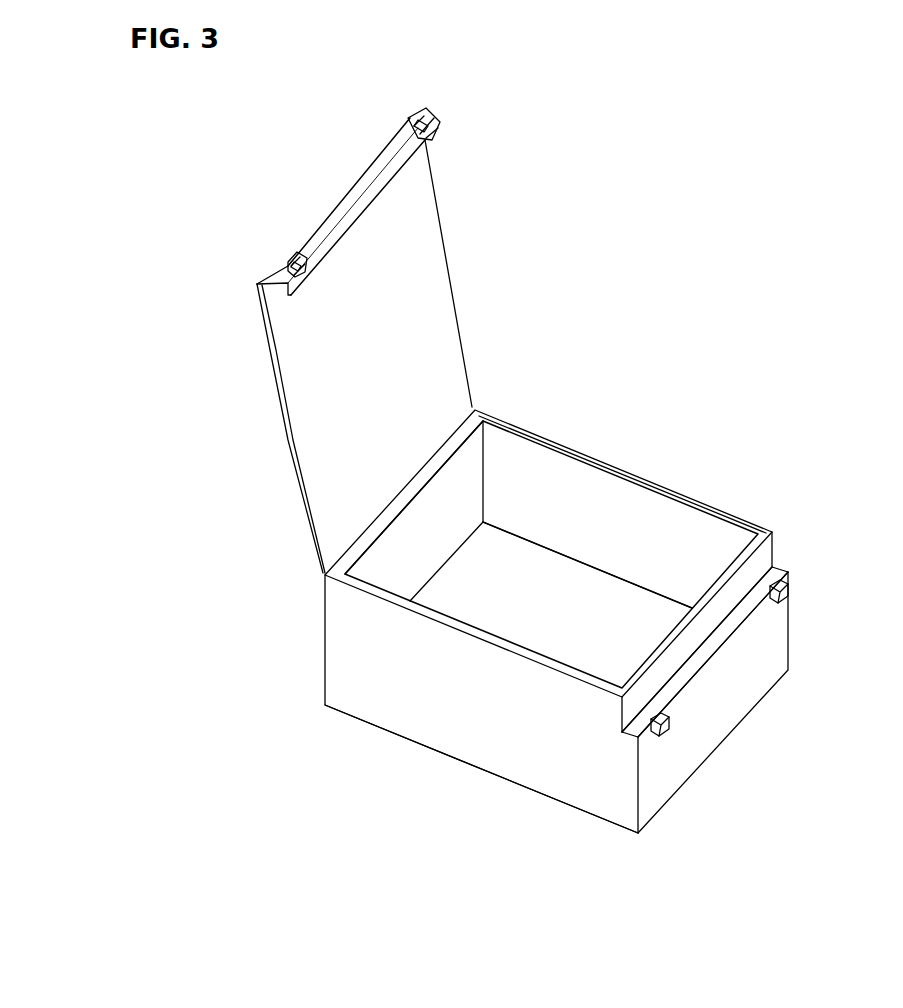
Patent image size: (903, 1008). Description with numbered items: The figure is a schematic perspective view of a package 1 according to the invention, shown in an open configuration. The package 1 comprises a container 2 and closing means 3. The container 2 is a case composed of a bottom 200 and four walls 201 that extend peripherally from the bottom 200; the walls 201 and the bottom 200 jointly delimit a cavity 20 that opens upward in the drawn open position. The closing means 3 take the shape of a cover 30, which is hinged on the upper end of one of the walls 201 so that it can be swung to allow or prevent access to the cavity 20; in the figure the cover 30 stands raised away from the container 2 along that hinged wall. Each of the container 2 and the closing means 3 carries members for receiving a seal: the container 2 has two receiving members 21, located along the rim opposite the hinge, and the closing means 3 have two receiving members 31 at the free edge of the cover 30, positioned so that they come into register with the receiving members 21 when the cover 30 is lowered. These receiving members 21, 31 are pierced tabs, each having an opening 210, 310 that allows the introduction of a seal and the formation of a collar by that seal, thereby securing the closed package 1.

The package 1 is at (567, 505).
The container 2 is at (601, 644).
The cavity 20 is at (568, 570).
The bottom 200 is at (623, 623).
The walls 201 is at (445, 495).
The receiving member 21 is at (749, 680).
The opening 210 is at (783, 590).
The closing means 3 is at (428, 340).
The cover 30 is at (425, 302).
The receiving member 31 is at (425, 192).
The opening 310 is at (307, 257).